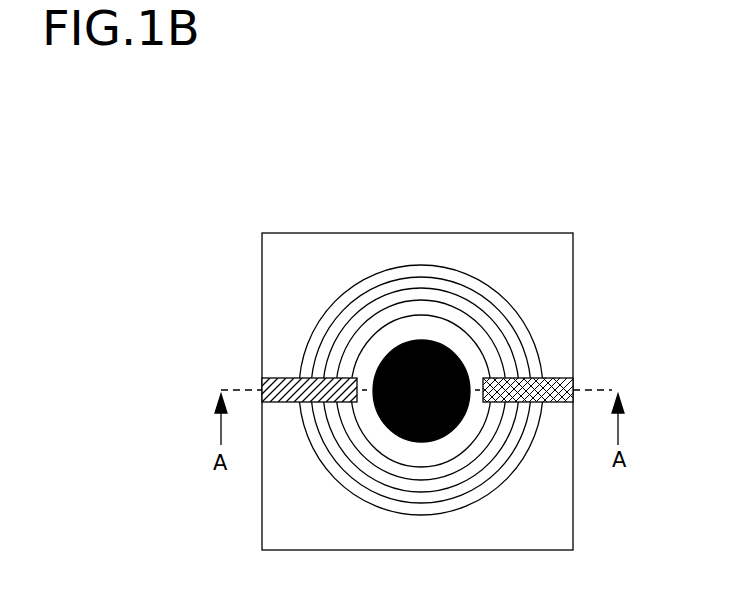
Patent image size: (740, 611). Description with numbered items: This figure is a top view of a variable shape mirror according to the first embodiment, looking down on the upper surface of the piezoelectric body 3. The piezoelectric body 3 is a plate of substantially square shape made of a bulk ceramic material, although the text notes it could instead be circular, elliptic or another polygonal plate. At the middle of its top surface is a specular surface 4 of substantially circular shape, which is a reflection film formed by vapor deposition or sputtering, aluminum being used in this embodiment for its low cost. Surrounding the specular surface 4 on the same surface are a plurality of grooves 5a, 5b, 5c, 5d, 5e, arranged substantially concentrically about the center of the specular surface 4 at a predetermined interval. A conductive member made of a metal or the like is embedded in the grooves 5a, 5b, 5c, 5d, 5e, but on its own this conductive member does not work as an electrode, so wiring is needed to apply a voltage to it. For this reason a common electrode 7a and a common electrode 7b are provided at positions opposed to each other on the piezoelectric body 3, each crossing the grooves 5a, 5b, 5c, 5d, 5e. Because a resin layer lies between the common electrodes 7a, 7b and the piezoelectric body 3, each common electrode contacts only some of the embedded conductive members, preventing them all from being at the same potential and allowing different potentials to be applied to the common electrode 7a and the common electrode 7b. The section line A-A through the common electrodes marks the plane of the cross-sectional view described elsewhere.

The piezoelectric body 3 is at (557, 270).
The specular surface 4 is at (460, 357).
The groove 5a is at (369, 338).
The groove 5b is at (391, 306).
The groove 5c is at (420, 291).
The groove 5d is at (442, 279).
The groove 5e is at (484, 282).
The common electrode 7a is at (553, 403).
The common electrode 7b is at (290, 403).